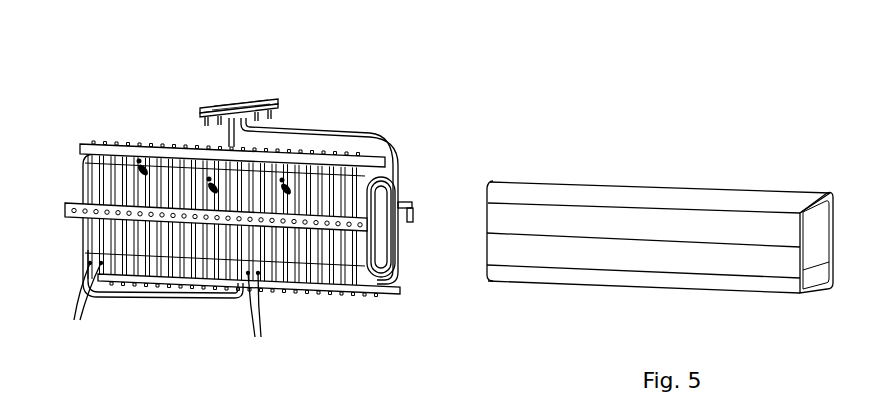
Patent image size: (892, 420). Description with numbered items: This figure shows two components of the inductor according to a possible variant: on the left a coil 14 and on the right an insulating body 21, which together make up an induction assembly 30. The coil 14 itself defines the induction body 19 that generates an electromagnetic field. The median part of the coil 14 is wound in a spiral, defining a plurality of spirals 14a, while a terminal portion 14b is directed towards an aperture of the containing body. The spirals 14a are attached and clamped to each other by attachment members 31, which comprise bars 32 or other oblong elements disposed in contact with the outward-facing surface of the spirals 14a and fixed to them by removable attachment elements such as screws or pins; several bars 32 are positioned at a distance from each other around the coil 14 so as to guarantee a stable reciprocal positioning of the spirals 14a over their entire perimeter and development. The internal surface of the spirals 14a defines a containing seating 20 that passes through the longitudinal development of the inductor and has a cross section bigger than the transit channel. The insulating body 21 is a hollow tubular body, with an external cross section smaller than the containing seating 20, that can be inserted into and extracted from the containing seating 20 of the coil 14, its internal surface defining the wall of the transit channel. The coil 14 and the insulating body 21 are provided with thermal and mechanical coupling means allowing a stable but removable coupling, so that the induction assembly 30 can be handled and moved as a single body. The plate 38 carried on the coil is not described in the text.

The coil 14 is at (164, 171).
The spirals 14a is at (228, 124).
The terminal portion 14b is at (246, 122).
The induction body 19 is at (399, 156).
The containing seating 20 is at (413, 211).
The insulating body 21 is at (768, 188).
The induction assembly 30 is at (540, 124).
The attachment members 31 is at (93, 150).
The bars 32 is at (334, 161).
The mounting plate 38 is at (263, 91).